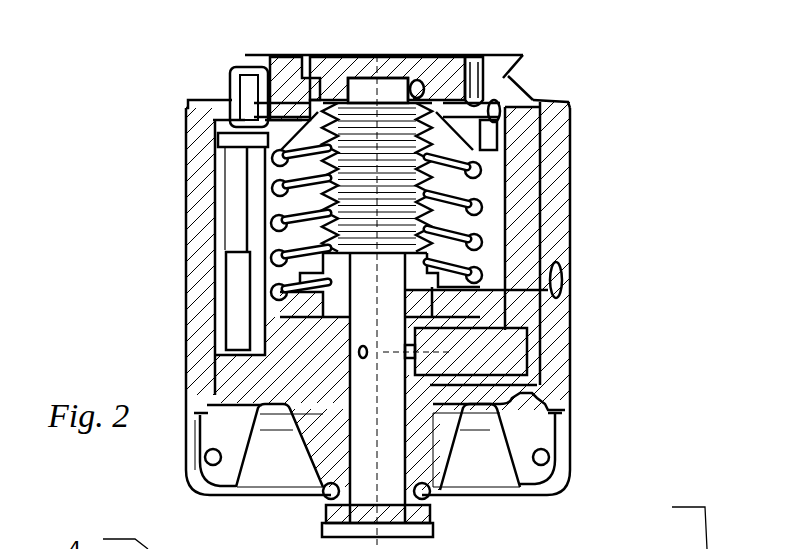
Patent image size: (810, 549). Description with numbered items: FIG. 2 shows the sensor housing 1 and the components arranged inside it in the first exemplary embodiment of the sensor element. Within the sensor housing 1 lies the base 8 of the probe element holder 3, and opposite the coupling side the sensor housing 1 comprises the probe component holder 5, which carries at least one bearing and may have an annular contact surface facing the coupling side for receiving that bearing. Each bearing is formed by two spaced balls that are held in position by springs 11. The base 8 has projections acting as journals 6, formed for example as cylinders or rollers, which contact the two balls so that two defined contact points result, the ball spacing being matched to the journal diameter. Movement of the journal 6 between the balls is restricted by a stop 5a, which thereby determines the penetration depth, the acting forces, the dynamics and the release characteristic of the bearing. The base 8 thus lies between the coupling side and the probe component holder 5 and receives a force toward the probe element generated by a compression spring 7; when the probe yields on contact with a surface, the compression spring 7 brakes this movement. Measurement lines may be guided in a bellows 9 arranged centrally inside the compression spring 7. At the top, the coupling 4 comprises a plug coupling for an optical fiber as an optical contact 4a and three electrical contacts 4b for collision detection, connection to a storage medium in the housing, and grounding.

The sensor housing 1 is at (130, 130).
The probe element holder 3 is at (437, 493).
The coupling 4 is at (342, 58).
The optical contact 4a is at (480, 60).
The electrical contacts 4b is at (248, 60).
The probe component holder 5 is at (233, 447).
The stop 5a is at (553, 385).
The journals 6 is at (497, 340).
The compression spring 7 is at (480, 262).
The base 8 is at (300, 353).
The bellows 9 is at (489, 95).
The springs 11 is at (660, 528).